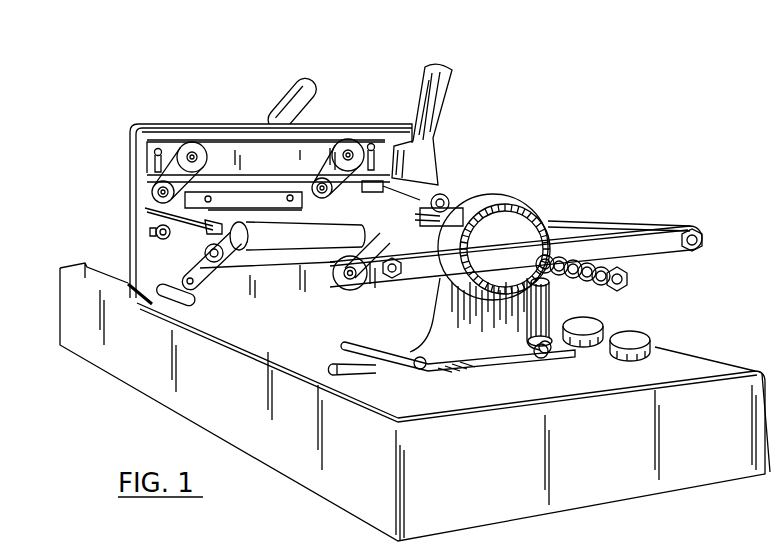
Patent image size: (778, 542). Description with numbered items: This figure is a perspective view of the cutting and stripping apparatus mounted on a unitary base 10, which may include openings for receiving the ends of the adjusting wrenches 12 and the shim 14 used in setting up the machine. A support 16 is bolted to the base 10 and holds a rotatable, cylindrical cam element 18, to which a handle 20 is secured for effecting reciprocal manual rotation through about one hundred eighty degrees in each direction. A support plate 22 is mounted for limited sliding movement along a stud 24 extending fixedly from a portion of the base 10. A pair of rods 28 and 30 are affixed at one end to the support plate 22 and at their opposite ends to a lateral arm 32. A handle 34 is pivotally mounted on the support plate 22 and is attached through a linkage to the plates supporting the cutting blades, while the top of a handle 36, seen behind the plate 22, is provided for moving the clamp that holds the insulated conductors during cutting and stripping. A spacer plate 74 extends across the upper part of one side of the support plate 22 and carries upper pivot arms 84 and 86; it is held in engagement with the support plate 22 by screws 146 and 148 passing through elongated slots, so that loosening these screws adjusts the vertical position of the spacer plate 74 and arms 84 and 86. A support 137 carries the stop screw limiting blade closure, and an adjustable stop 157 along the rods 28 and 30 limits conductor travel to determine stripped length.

The unitary base 10 is at (147, 382).
The adjusting wrenches 12 is at (585, 328).
The shim 14 is at (378, 372).
The support 16 is at (478, 358).
The cam element 18 is at (470, 207).
The handle 20 is at (280, 237).
The support plate 22 is at (150, 262).
The stud 24 is at (172, 302).
The rod 28 is at (335, 265).
The rod 30 is at (547, 223).
The lateral arm 32 is at (662, 243).
The handle 34 is at (460, 83).
The handle 36 is at (313, 83).
The spacer plate 74 is at (213, 150).
The upper pivot arm 84 is at (178, 158).
The upper pivot arm 86 is at (337, 166).
The support 137 is at (153, 238).
The screw 146 is at (150, 150).
The screw 148 is at (377, 145).
The stop 157 is at (440, 194).